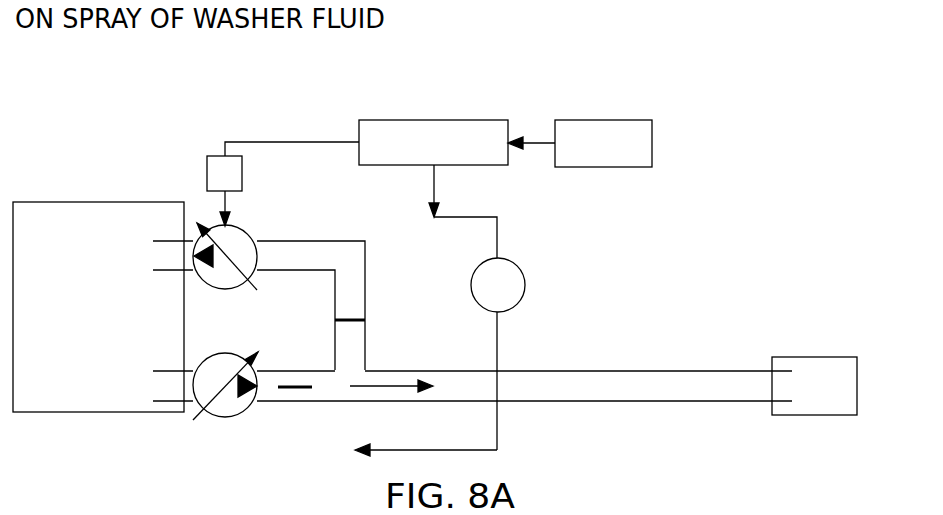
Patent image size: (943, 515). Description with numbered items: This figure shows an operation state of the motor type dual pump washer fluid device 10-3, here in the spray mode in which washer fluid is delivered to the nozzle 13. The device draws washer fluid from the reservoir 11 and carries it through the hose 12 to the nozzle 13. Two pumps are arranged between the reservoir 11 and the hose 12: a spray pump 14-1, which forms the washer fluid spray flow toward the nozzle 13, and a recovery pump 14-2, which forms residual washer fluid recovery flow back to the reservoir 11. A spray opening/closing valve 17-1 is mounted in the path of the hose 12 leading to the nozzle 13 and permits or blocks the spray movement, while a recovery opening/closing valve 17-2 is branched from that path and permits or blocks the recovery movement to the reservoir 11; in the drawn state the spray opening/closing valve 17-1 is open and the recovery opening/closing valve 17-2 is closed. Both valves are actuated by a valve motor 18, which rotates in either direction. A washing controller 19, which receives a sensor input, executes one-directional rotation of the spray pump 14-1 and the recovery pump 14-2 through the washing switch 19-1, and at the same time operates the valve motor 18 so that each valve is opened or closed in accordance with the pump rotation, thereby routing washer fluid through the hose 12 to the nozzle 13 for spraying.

The motor type dual pump washer fluid device 10-3 is at (736, 200).
The reservoir 11 is at (98, 202).
The hose 12 is at (677, 368).
The nozzle 13 is at (813, 357).
The spray pump 14-1 is at (200, 358).
The recovery pump 14-2 is at (193, 278).
The spray opening/closing valve 17-1 is at (292, 382).
The recovery opening/closing valve 17-2 is at (347, 318).
The valve motor 18 is at (525, 283).
The washing controller 19 is at (433, 120).
The washing switch 19-1 is at (217, 153).